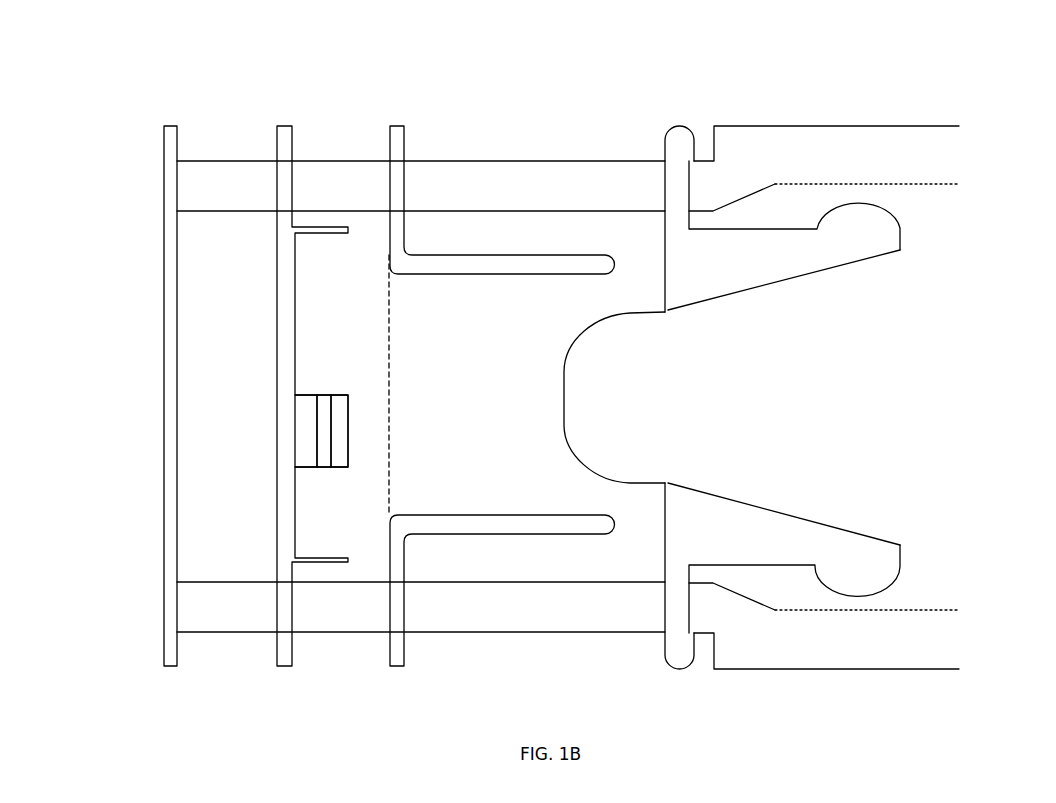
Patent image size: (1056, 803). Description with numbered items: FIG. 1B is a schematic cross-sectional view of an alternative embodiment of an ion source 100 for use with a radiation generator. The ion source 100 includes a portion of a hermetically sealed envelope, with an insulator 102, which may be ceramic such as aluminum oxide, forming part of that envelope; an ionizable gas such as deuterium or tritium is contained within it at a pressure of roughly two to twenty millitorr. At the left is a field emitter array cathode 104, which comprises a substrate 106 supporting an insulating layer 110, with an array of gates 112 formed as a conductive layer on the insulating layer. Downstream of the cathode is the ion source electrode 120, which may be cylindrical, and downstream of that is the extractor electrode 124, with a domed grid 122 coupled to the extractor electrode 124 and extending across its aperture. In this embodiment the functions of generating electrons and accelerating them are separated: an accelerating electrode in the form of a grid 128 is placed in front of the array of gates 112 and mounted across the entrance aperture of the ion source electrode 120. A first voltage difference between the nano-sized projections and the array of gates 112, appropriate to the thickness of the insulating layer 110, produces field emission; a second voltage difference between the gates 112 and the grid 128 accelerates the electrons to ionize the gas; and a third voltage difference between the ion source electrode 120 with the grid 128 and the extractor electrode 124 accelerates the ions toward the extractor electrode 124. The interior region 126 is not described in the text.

The ion source 100 is at (213, 62).
The insulator 102 is at (192, 186).
The field emitter array cathode 104 is at (274, 402).
The substrate 106 is at (308, 420).
The insulating layer 110 is at (327, 432).
The array of gates 112 is at (338, 449).
The ion source electrode 120 is at (562, 263).
The domed grid 122 is at (645, 486).
The extractor electrode 124 is at (858, 237).
The cavity 126 is at (485, 363).
The grid 128 is at (386, 371).